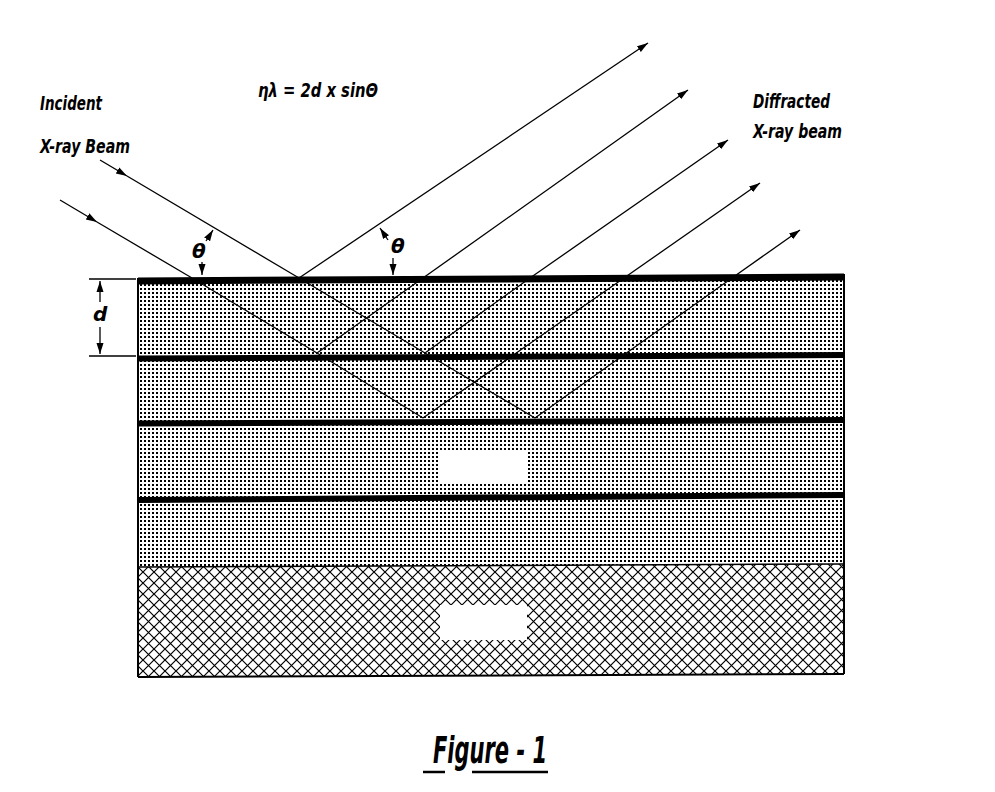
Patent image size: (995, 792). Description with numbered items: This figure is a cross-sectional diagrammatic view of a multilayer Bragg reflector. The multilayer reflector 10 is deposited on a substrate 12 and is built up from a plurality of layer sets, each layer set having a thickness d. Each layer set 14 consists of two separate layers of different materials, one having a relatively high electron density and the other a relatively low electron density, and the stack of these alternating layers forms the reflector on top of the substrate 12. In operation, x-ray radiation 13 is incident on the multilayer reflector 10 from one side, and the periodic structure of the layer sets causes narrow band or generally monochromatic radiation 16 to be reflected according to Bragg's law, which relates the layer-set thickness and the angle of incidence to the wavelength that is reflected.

The multilayer reflector 10 is at (482, 420).
The substrate 12 is at (138, 624).
The x-ray radiation 13 is at (175, 200).
The layer set 14 is at (842, 273).
The monochromatic radiation 16 is at (680, 70).